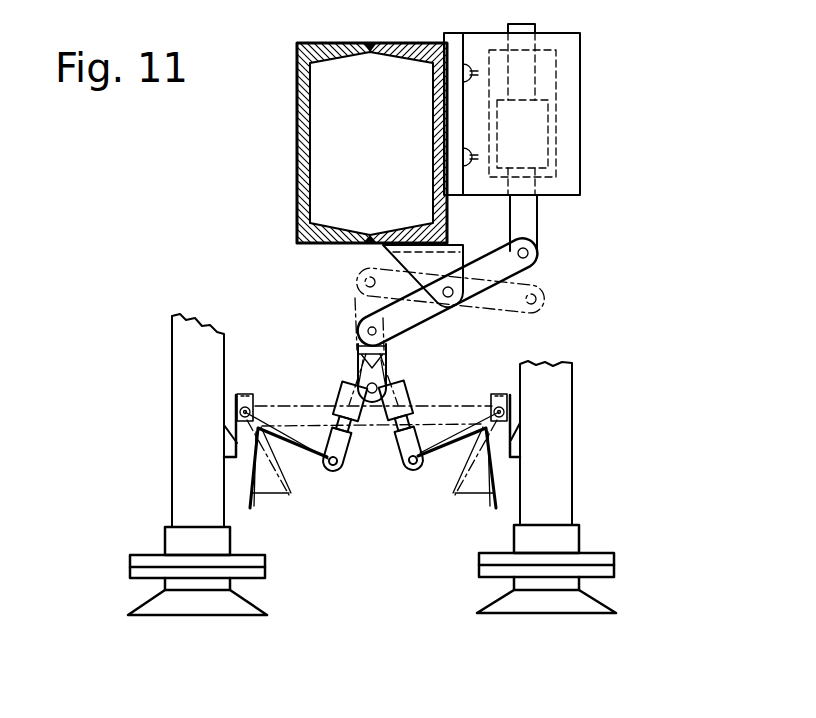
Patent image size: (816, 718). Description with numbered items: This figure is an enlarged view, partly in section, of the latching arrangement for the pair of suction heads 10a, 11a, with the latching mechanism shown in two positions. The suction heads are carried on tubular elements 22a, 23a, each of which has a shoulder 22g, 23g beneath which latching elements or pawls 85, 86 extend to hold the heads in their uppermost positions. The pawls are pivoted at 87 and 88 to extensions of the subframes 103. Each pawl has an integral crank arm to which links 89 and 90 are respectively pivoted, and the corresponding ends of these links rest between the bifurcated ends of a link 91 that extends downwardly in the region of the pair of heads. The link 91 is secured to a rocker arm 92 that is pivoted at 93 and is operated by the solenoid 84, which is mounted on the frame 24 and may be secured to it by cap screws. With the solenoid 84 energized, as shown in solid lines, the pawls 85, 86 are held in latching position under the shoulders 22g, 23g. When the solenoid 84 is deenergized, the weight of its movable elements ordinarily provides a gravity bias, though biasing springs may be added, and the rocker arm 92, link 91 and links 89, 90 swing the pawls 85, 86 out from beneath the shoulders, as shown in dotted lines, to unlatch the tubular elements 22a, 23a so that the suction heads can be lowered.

The frame 24 is at (297, 147).
The solenoid 84 is at (580, 187).
The rocker arm 92 is at (410, 272).
The pivot 93 is at (450, 296).
The link 91 is at (378, 383).
The subframe extension 103 is at (247, 393).
The pawl pivot 87 is at (250, 411).
The pawl pivot 88 is at (497, 408).
The link 89 is at (343, 458).
The link 90 is at (405, 457).
The latching pawl 85 is at (258, 497).
The latching pawl 86 is at (492, 500).
The tubular element 22a is at (172, 384).
The shoulder 22g is at (230, 447).
The tubular element 23a is at (567, 410).
The shoulder 23g is at (517, 440).
The suction head 10a is at (190, 610).
The suction head 11a is at (560, 607).